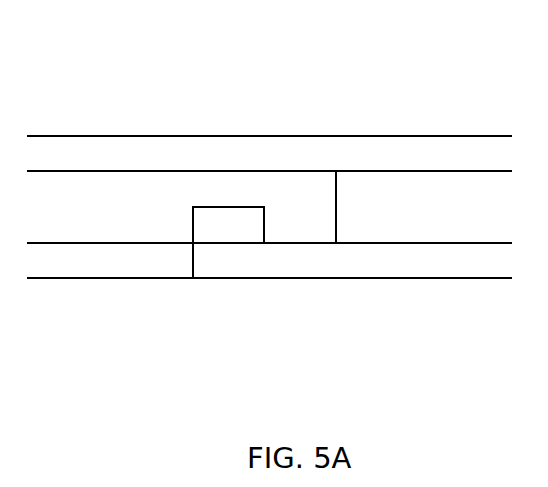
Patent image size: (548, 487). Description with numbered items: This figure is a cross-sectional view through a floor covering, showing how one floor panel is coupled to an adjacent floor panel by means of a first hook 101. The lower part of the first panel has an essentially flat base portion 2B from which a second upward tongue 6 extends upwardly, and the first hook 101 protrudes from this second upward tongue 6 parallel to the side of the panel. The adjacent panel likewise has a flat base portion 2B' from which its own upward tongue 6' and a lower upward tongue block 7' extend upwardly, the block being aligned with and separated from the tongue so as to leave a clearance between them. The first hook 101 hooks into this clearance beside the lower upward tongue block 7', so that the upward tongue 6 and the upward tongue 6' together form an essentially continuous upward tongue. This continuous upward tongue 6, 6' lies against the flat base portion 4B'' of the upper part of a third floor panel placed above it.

The second upward tongue 6 is at (148, 130).
The upward tongue of adjacent floor panel 6' is at (391, 130).
The first hook 101 is at (293, 198).
The base portion 4B'' is at (269, 130).
The lower upward tongue block 7' is at (228, 286).
The flat base portion 2B is at (148, 327).
The flat base portion of adjacent floor panel 2B' is at (391, 332).